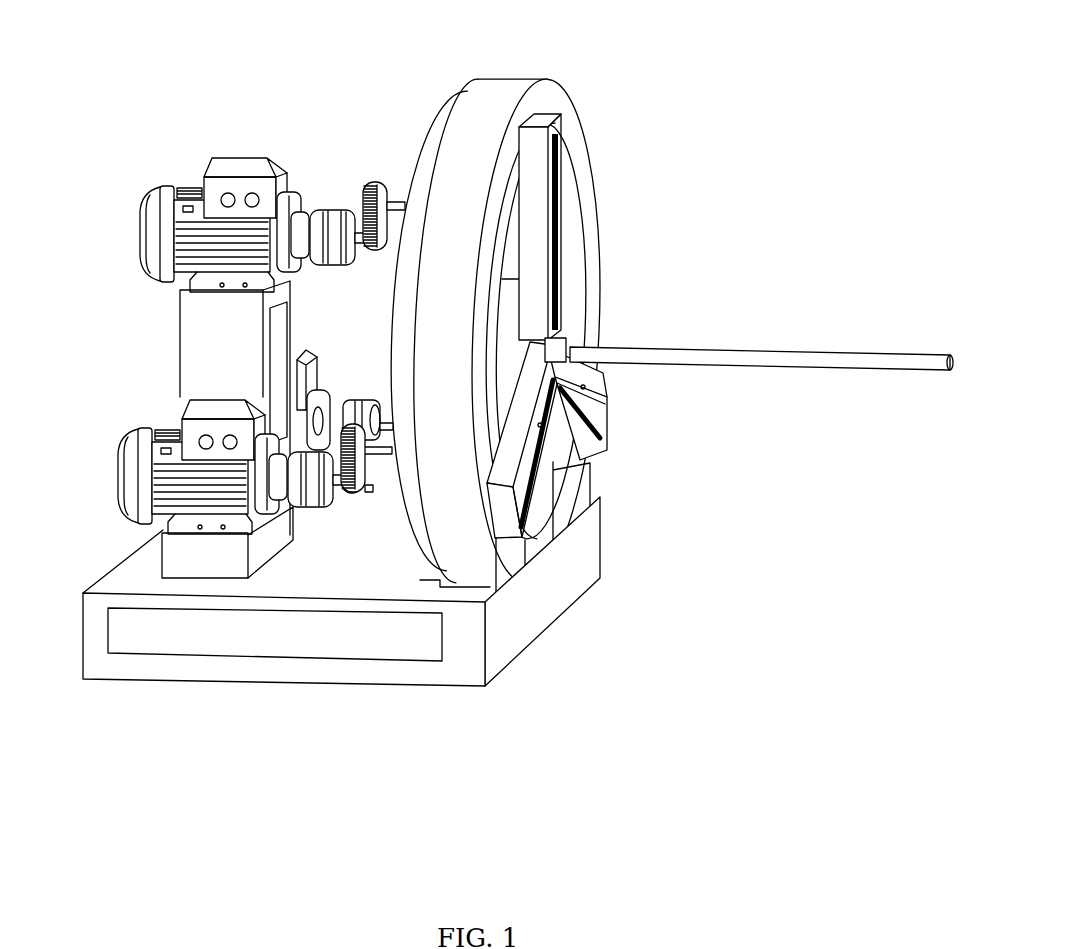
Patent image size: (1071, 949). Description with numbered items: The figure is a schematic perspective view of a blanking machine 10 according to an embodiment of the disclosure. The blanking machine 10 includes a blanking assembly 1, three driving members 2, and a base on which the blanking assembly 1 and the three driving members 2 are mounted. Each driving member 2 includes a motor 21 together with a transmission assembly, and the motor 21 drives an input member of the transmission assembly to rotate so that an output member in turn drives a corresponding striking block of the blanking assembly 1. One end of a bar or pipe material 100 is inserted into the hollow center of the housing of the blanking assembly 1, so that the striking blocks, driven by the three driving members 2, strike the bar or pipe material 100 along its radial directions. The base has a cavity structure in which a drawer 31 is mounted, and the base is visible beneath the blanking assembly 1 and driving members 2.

The blanking machine 10 is at (357, 58).
The blanking assembly 1 is at (488, 67).
The driving member 2 is at (148, 155).
The motor 21 is at (153, 220).
The drawer 31 is at (267, 637).
The bar or pipe material 100 is at (770, 358).